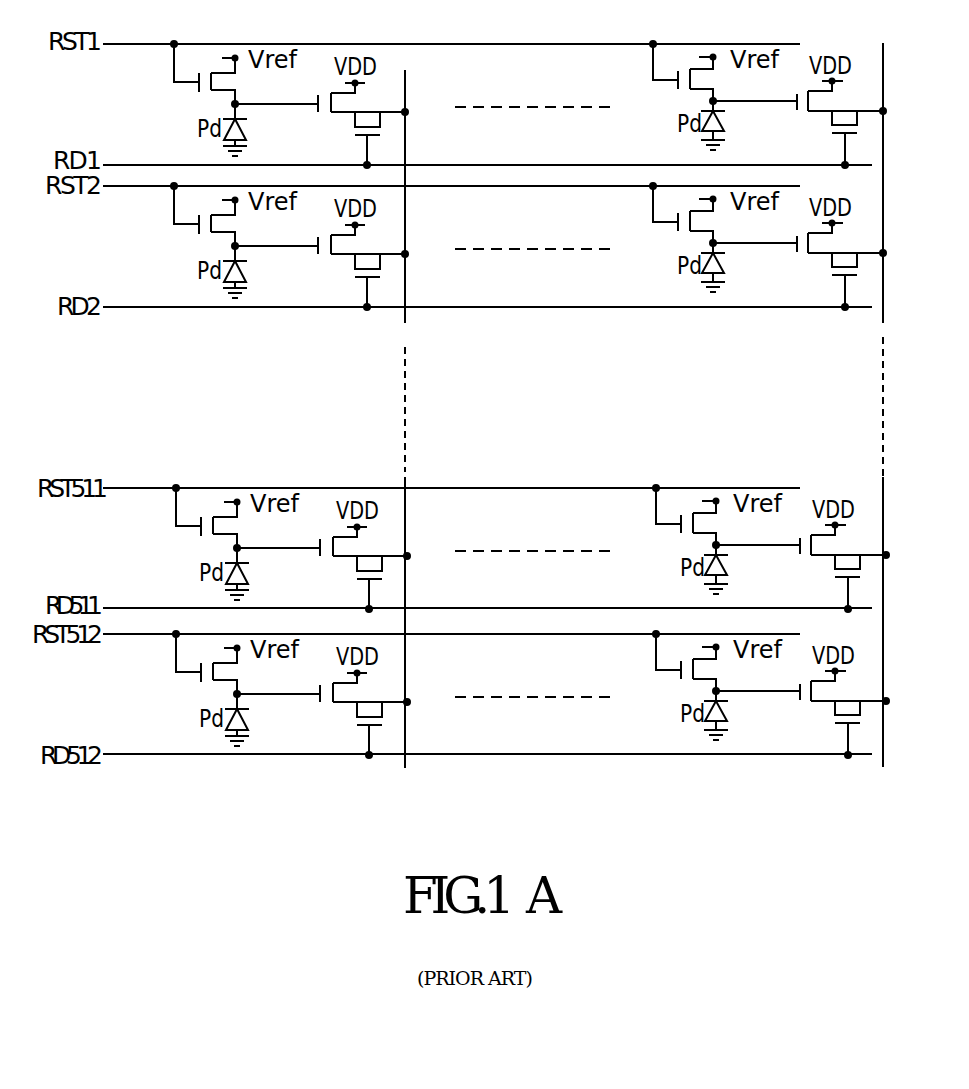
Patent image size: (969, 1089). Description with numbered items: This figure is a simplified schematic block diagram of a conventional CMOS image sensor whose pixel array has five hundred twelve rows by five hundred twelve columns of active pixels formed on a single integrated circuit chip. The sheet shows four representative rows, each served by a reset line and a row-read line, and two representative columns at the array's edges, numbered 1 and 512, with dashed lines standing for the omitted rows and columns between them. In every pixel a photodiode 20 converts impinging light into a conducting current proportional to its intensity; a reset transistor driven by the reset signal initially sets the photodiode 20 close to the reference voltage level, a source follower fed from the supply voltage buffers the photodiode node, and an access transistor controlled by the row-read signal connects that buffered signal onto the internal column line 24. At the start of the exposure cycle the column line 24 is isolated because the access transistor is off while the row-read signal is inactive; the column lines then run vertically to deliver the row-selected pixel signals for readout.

The photodiode 20 is at (246, 128).
The internal column line 24 is at (406, 80).
The first column line 1 is at (405, 703).
The last column line 512 is at (875, 424).